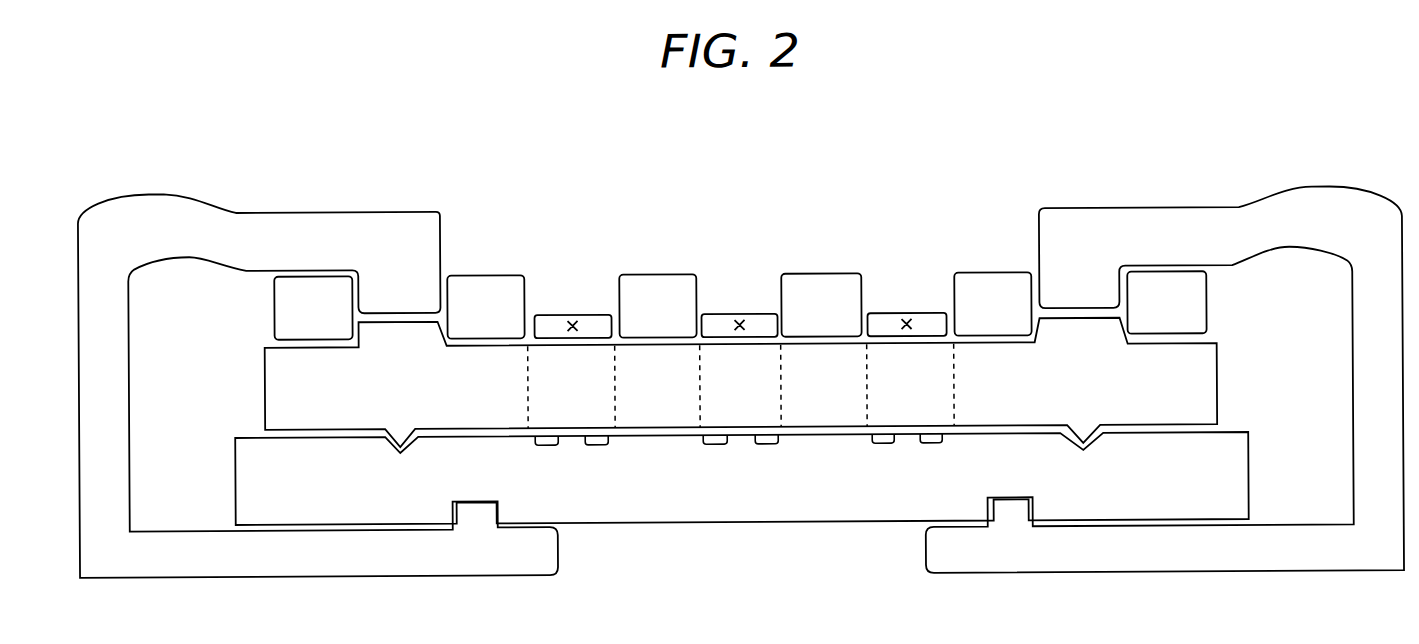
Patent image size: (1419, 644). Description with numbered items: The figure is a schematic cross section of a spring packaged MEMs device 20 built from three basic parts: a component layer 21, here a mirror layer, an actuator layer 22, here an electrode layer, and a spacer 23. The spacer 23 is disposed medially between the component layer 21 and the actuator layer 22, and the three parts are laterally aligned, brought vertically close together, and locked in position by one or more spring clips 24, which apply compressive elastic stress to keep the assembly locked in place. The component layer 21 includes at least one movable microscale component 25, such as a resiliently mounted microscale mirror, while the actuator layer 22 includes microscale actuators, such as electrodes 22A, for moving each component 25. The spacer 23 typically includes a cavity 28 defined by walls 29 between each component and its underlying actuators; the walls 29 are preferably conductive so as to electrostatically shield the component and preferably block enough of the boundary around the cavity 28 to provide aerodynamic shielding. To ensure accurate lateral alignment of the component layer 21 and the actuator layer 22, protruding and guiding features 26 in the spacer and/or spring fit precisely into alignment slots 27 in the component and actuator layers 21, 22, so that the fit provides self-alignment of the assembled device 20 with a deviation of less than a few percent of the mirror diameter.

The spring packaged MEMs device 20 is at (547, 140).
The component layer 21 is at (656, 273).
The actuator layer 22 is at (1250, 482).
The electrodes 22A is at (547, 446).
The spacer 23 is at (1217, 392).
The spring clips 24 is at (372, 209).
The movable microscale component 25 is at (557, 313).
The protruding and guiding features 26 is at (418, 316).
The alignment slots 27 is at (378, 314).
The cavity 28 is at (758, 358).
The walls 29 is at (781, 392).